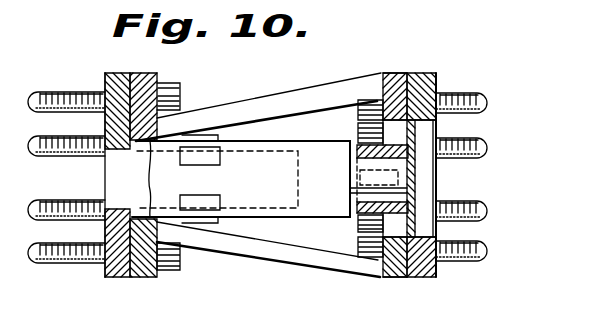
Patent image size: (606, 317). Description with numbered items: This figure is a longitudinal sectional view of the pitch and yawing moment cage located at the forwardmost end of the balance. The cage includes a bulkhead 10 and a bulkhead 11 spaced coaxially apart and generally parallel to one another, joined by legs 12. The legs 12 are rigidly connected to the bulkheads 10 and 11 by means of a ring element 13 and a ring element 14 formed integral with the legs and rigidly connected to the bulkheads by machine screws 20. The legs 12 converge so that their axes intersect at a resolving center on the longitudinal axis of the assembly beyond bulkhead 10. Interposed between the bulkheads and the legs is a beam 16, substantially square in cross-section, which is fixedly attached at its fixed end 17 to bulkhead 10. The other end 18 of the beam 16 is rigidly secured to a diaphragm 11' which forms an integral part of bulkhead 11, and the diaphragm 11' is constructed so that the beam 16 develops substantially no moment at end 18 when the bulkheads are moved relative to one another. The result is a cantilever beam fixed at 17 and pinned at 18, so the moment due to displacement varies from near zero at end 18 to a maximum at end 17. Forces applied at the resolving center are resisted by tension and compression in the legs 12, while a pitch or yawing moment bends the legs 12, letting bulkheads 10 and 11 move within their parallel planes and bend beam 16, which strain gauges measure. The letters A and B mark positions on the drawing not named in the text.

The bulkhead 10 is at (105, 277).
The bulkhead 11 is at (435, 181).
The diaphragm 11' is at (422, 182).
The legs 12 is at (326, 76).
The ring element 13 is at (383, 277).
The ring element 14 is at (141, 277).
The beam 16 is at (280, 137).
The fixed end 17 is at (183, 88).
The other end of beam 18 is at (413, 163).
The machine screws 20 is at (371, 100).
The point A is at (217, 141).
The point B is at (222, 210).